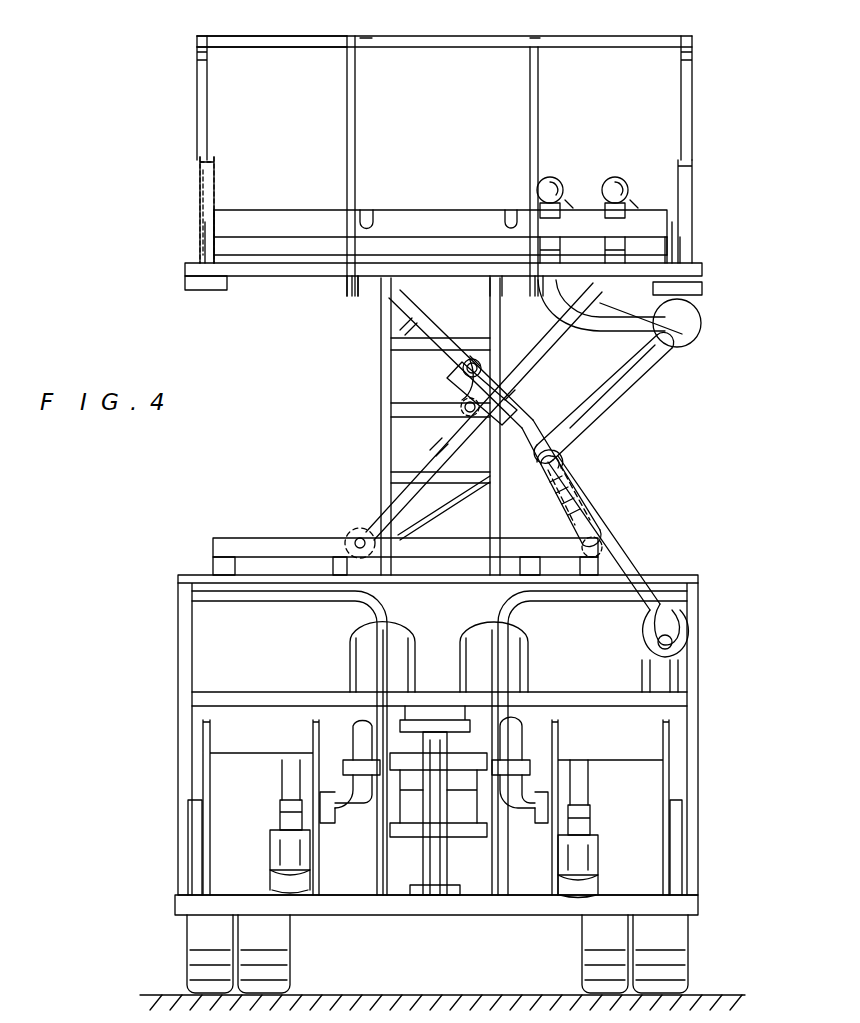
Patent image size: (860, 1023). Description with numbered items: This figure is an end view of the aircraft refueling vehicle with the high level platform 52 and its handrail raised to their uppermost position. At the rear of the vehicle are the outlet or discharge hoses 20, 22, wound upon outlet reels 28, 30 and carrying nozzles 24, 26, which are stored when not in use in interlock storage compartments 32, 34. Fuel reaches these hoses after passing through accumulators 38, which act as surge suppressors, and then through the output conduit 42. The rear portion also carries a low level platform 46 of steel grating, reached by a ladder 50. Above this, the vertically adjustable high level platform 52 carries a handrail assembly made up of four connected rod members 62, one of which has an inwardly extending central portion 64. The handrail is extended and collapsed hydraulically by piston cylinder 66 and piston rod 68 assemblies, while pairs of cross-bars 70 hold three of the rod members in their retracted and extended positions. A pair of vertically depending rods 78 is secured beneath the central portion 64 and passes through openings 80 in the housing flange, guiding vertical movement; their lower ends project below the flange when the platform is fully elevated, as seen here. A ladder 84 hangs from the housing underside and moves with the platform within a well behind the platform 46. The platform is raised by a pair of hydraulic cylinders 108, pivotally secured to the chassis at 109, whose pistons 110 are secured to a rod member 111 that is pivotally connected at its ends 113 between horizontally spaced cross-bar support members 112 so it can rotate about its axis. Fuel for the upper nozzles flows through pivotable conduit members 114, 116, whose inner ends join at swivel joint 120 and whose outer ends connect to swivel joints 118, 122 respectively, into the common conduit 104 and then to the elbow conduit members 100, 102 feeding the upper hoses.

The outlet or discharge hose 20 is at (290, 790).
The outlet or discharge hose 22 is at (586, 798).
The nozzle 24 is at (290, 822).
The nozzle 26 is at (575, 828).
The outlet reel 28 is at (204, 755).
The outlet reel 30 is at (655, 766).
The interlock storage compartment 32 is at (282, 862).
The interlock storage compartment 34 is at (585, 866).
The accumulator 38 is at (470, 664).
The output conduit 42 is at (514, 746).
The low level platform 46 is at (188, 573).
The ladder 50 is at (475, 830).
The high level platform 52 is at (226, 209).
The rod member 62 is at (316, 44).
The inwardly extending central portion 64 is at (407, 47).
The piston cylinder 66 is at (210, 234).
The piston rod 68 is at (214, 180).
The cross-bar 70 is at (197, 121).
The vertically depending rod 78 is at (356, 115).
The opening 80 is at (345, 292).
The ladder 84 is at (381, 455).
The elbow conduit member 100 is at (548, 194).
The elbow conduit member 102 is at (618, 195).
The common conduit 104 is at (645, 368).
The hydraulic cylinder 108 is at (535, 440).
The pivotal securement point 109 is at (558, 538).
The piston 110 is at (515, 380).
The rod member 111 is at (476, 360).
The cross-bar support member 112 is at (543, 325).
The pivotal end connection 113 is at (460, 376).
The pivotable conduit member 114 is at (612, 406).
The pivotable conduit member 116 is at (625, 558).
The swivel joint 118 is at (695, 332).
The swivel joint 120 is at (565, 464).
The swivel joint 122 is at (682, 640).